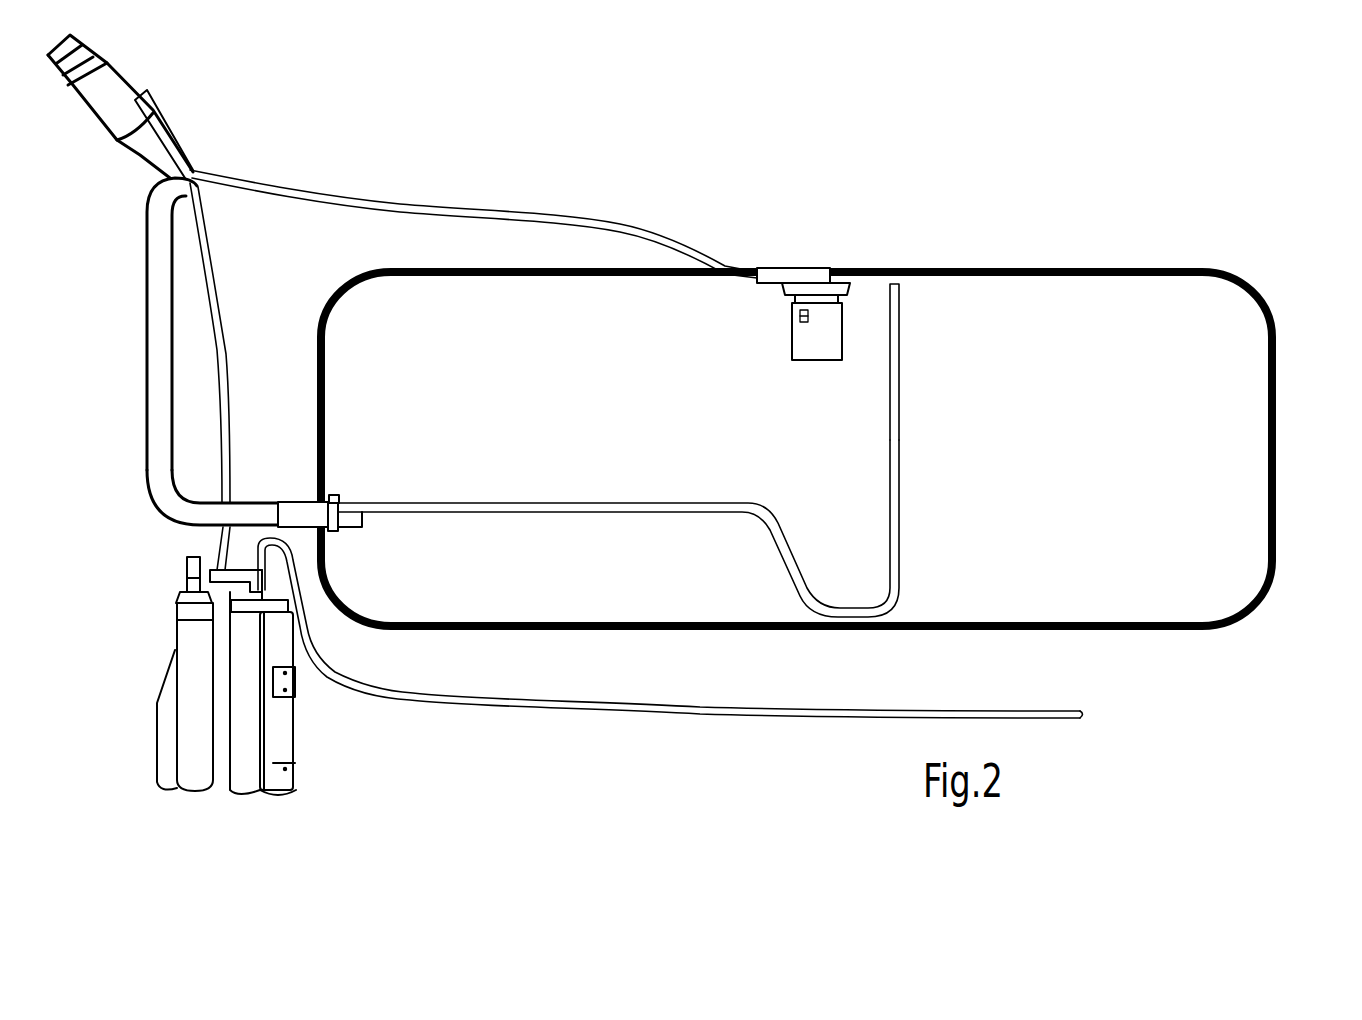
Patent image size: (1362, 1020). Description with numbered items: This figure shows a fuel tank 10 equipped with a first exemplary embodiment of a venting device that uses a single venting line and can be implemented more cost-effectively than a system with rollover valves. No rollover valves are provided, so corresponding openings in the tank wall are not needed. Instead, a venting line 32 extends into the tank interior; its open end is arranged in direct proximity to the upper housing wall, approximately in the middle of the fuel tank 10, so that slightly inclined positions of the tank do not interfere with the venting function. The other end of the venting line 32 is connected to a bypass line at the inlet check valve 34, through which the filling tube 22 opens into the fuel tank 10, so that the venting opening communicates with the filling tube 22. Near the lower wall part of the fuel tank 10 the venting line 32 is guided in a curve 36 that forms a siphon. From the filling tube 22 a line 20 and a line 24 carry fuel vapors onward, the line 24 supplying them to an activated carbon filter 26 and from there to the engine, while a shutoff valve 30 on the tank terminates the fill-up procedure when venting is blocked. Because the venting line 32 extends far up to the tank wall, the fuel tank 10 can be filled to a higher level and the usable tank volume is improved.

The fuel tank 10 is at (1244, 288).
The line 20 is at (527, 213).
The filling tube 22 is at (138, 163).
The line 24 is at (215, 247).
The activated carbon filter 26 is at (166, 648).
The shutoff valve 30 is at (806, 280).
The venting line 32 is at (897, 318).
The inlet check valve 34 is at (320, 518).
The curve 36 is at (848, 612).